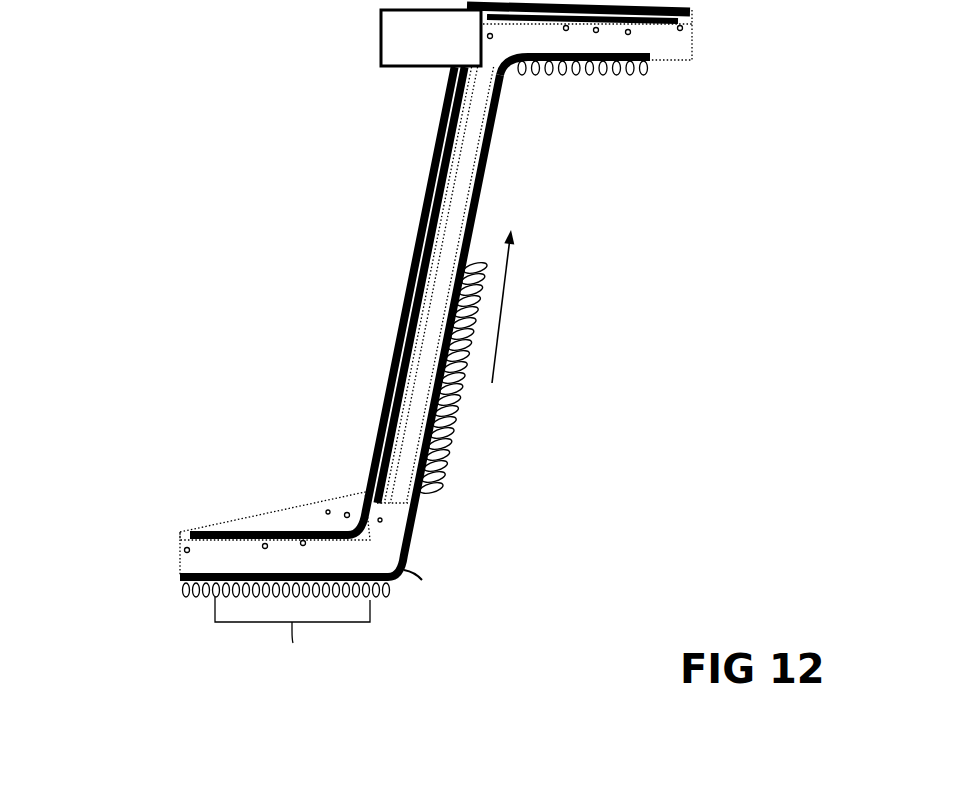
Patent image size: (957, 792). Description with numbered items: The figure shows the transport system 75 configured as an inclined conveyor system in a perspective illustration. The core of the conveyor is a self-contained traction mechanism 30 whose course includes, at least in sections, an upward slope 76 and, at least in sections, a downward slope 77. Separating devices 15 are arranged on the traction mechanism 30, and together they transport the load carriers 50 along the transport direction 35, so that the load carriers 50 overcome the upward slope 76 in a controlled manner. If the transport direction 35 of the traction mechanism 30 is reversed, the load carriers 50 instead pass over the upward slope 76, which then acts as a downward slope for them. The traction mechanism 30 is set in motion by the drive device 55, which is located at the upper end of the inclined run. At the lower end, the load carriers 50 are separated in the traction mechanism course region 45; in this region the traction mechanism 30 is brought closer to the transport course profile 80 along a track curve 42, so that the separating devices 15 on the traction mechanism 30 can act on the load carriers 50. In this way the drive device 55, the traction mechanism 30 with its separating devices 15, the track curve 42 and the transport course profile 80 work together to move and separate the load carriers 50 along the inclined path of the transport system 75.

The transport system 75 is at (122, 71).
The drive device 55 is at (374, 47).
The downward slope 77 is at (377, 339).
The traction mechanism 30 is at (386, 384).
The separating devices 15 is at (372, 427).
The transport direction 35 is at (524, 306).
The load carriers 50 is at (458, 399).
The upward slope 76 is at (454, 484).
The track curve 42 is at (267, 528).
The transport course profile 80 is at (176, 567).
The traction mechanism course region 45 is at (292, 642).